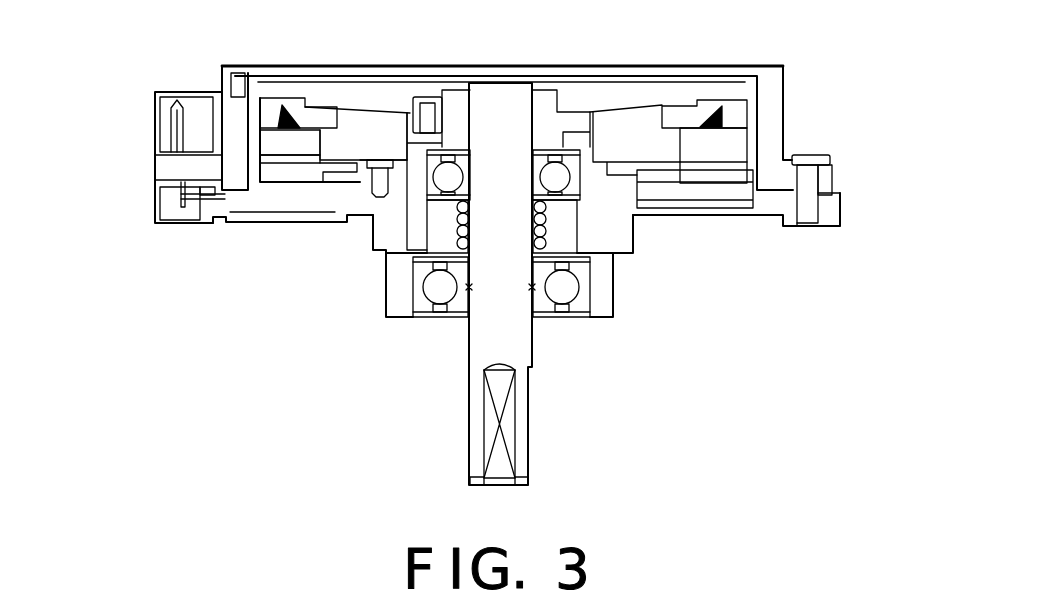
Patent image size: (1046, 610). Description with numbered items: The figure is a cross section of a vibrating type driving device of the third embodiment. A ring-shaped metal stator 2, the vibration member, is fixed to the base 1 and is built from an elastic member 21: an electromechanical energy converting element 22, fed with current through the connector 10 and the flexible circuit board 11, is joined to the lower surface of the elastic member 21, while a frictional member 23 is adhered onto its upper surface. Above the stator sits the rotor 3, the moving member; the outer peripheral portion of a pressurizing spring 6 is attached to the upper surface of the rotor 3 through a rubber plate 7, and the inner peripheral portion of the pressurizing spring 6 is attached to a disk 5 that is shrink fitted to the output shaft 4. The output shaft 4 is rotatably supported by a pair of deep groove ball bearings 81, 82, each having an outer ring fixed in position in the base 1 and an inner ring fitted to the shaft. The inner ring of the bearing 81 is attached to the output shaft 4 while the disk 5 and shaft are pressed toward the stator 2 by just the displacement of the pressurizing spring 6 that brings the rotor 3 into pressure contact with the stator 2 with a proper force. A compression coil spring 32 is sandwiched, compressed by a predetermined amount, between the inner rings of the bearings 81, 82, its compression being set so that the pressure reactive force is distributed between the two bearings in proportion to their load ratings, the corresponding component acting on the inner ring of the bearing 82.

The base 1 is at (832, 212).
The stator 2 is at (776, 145).
The rotor 3 is at (733, 107).
The output shaft 4 is at (503, 107).
The disk 5 is at (450, 98).
The pressurizing spring 6 is at (370, 110).
The rubber plate 7 is at (322, 107).
The connector 10 is at (160, 165).
The flexible circuit board 11 is at (237, 223).
The elastic member 21 is at (737, 165).
The electromechanical energy converting element 22 is at (757, 177).
The frictional member 23 is at (753, 115).
The compression coil spring 32 is at (547, 214).
The bearing 81 is at (433, 297).
The bearing 82 is at (430, 187).